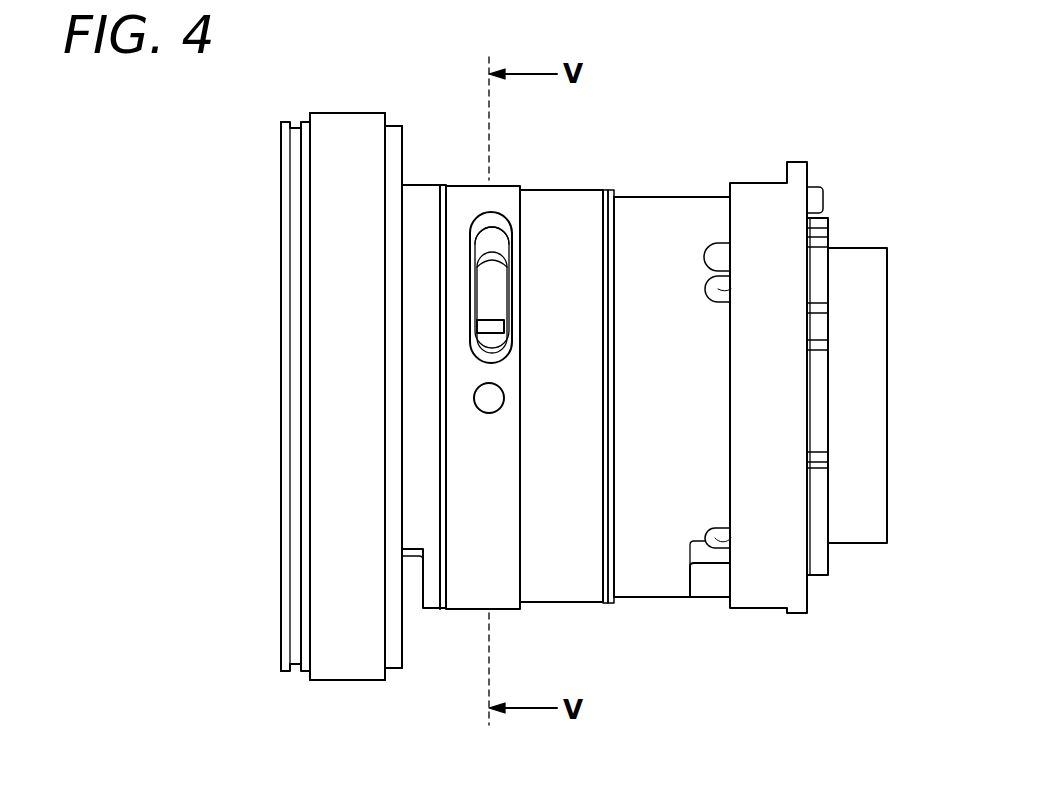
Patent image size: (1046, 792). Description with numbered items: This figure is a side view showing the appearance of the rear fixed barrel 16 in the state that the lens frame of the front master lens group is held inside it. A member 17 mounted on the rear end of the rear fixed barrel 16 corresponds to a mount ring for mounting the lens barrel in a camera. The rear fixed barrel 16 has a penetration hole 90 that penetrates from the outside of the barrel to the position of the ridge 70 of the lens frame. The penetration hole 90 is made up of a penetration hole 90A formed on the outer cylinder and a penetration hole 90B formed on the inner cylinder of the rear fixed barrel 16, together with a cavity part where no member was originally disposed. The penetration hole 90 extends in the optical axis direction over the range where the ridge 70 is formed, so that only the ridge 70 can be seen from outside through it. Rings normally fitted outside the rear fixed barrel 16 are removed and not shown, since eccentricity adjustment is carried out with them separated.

The rear fixed barrel 16 is at (652, 205).
The mount ring 17 is at (800, 143).
The ridge 70 is at (478, 324).
The penetration hole 90 is at (486, 237).
The penetration hole of outer cylinder 90A is at (502, 222).
The penetration hole of inner cylinder 90B is at (510, 258).